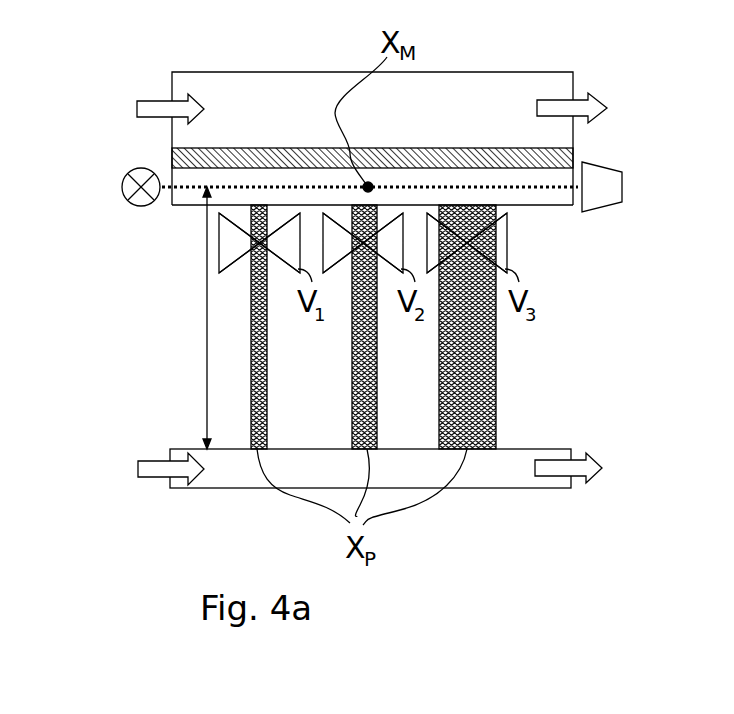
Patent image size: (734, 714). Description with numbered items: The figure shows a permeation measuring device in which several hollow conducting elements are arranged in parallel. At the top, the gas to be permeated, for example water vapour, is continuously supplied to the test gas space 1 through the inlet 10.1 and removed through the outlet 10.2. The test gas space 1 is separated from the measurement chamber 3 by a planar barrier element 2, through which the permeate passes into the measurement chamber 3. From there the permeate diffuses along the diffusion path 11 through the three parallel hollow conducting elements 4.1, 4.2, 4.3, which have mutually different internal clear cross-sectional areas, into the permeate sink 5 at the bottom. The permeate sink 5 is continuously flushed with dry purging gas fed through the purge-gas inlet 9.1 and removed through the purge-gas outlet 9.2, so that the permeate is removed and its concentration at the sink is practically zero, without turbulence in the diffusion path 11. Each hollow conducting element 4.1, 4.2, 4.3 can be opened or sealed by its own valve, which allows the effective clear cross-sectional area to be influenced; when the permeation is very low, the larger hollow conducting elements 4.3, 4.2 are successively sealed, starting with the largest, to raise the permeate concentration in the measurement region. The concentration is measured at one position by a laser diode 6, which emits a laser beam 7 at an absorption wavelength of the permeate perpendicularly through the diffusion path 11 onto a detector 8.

The test gas space 1 is at (562, 81).
The barrier element 2 is at (172, 163).
The measurement chamber 3 is at (560, 203).
The hollow conducting element 4.1 is at (251, 410).
The hollow conducting element 4.2 is at (352, 380).
The hollow conducting element 4.3 is at (496, 358).
The permeate sink 5 is at (563, 488).
The laser diode 6 is at (127, 175).
The laser beam 7 is at (513, 189).
The detector 8 is at (612, 192).
The purge-gas inlet 9.1 is at (138, 466).
The purge-gas outlet 9.2 is at (605, 467).
The inlet 10.1 is at (160, 108).
The outlet 10.2 is at (593, 107).
The diffusion path 11 is at (207, 252).